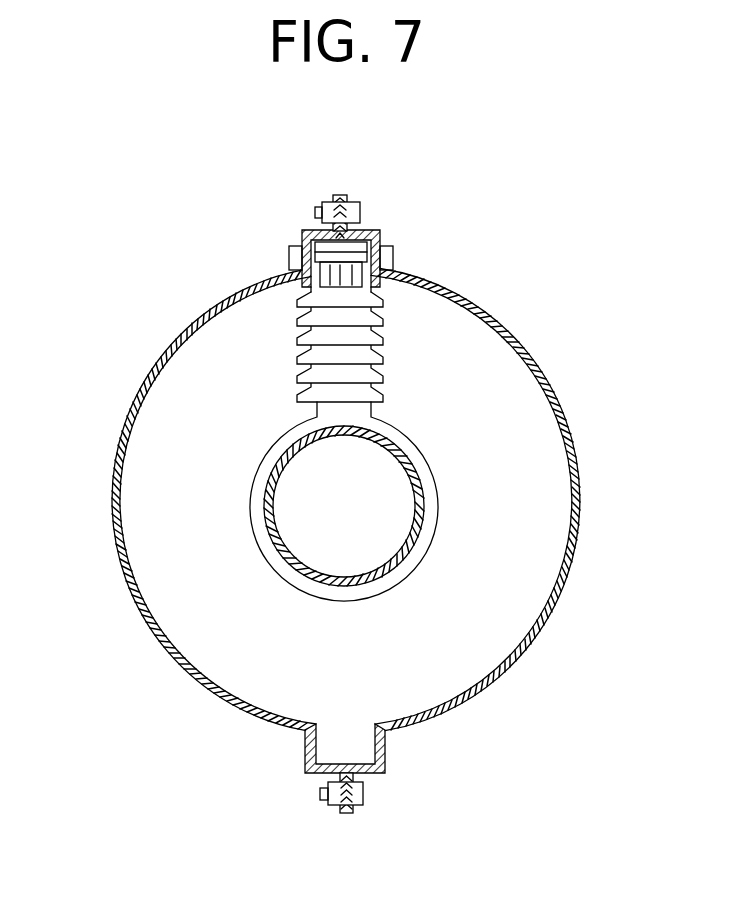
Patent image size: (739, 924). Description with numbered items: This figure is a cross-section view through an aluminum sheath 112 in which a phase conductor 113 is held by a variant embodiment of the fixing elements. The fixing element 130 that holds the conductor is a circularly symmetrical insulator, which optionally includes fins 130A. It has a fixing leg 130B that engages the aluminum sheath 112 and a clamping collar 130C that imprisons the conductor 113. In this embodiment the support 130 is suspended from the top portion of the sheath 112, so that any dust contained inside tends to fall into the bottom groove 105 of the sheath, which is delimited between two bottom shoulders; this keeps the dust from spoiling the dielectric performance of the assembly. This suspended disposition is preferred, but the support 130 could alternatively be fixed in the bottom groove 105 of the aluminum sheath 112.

The groove 105 is at (343, 752).
The aluminum sheath 112 is at (116, 448).
The phase conductor 113 is at (265, 502).
The fixing element 130 is at (335, 393).
The fins 130A is at (382, 352).
The fixing leg 130B is at (310, 231).
The clamping collar 130C is at (437, 501).